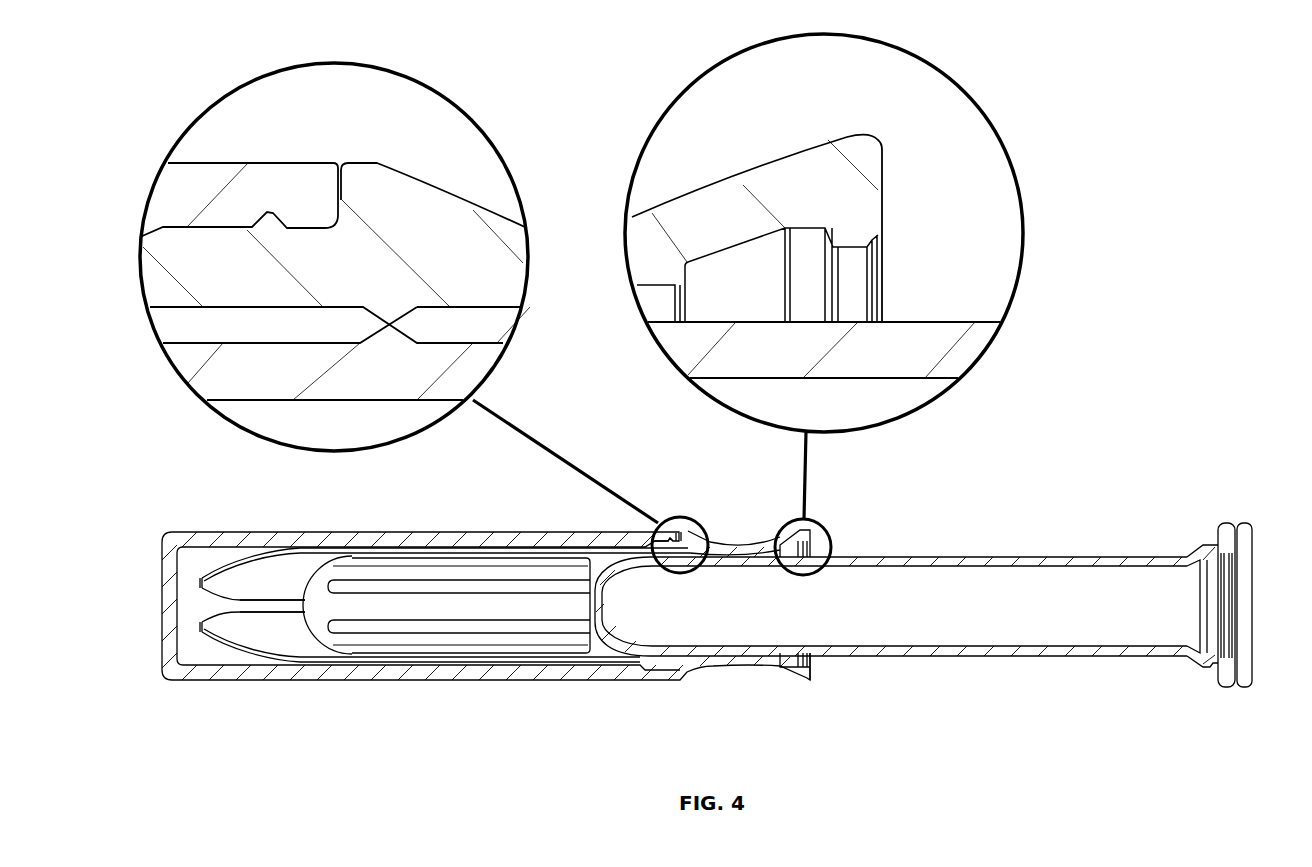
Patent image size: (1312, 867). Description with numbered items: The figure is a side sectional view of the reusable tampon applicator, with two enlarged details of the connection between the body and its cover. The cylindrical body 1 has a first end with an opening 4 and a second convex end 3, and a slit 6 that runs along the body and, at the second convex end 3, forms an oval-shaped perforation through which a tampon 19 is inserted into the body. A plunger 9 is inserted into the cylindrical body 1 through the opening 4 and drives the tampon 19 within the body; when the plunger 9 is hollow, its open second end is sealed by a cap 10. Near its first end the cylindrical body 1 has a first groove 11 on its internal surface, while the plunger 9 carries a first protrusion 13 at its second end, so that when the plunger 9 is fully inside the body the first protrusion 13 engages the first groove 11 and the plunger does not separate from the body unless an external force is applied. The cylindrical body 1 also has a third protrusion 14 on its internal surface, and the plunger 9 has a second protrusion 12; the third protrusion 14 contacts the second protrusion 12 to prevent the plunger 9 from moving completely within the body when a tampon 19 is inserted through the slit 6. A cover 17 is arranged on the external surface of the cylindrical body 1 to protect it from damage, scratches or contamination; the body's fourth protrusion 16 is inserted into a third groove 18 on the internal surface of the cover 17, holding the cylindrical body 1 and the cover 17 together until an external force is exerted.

The cylindrical body 1 is at (510, 220).
The second convex end 3 is at (202, 585).
The opening 4 is at (814, 660).
The slit 6 is at (273, 603).
The plunger 9 is at (277, 400).
The cap 10 is at (1248, 545).
The first groove 11 is at (747, 260).
The second protrusion 12 is at (400, 343).
The first protrusion 13 is at (1210, 547).
The third protrusion 14 is at (397, 307).
The fourth protrusion 16 is at (273, 220).
The cover 17 is at (197, 163).
The third groove 18 is at (280, 207).
The tampon 19 is at (447, 570).